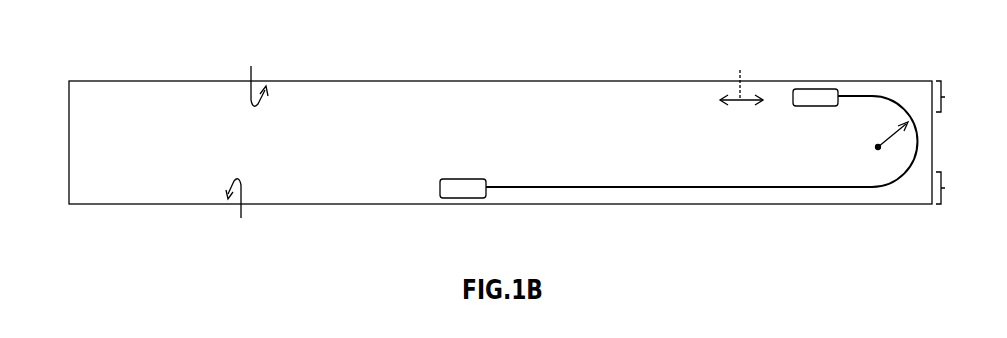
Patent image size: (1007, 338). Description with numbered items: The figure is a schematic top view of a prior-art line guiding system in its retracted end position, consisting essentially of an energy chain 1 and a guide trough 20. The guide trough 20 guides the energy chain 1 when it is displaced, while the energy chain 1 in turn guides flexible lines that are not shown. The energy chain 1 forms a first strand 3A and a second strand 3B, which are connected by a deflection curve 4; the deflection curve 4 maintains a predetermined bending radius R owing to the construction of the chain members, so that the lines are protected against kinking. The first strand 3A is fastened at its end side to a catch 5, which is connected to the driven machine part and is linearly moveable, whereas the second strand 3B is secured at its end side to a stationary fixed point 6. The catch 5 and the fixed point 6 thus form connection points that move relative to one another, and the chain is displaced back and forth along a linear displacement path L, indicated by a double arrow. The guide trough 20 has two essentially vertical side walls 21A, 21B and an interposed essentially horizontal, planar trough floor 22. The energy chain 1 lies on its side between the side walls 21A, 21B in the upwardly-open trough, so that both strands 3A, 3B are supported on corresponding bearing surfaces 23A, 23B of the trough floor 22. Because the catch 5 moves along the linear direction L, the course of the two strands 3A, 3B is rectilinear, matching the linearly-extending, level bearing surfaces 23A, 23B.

The energy chain 1 is at (646, 108).
The first strand 3A is at (858, 96).
The second strand 3B is at (603, 189).
The deflection curve 4 is at (897, 177).
The catch 5 is at (806, 88).
The fixed point 6 is at (447, 192).
The guide trough 20 is at (104, 204).
The side wall 21A is at (262, 75).
The side wall 21B is at (243, 207).
The trough floor 22 is at (176, 142).
The bearing surface 23A is at (958, 96).
The bearing surface 23B is at (958, 188).
The linear displacement path L is at (741, 76).
The bending radius R is at (892, 141).